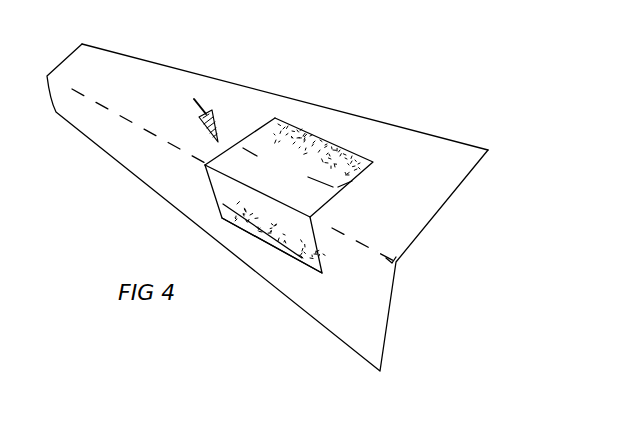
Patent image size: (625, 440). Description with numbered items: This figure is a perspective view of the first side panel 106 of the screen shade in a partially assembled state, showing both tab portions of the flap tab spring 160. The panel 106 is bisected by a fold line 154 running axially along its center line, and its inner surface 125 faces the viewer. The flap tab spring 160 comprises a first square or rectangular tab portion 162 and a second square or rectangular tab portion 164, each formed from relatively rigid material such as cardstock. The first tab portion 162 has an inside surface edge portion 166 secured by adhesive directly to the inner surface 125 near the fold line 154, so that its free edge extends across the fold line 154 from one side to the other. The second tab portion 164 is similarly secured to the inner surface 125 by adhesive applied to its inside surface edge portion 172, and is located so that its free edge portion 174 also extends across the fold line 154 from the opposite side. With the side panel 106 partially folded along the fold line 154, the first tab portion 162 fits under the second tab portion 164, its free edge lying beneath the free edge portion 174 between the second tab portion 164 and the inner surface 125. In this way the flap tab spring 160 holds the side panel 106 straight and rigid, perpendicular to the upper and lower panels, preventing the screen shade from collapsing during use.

The first side panel 106 is at (436, 205).
The inner surface 125 is at (115, 77).
The fold line 154 is at (371, 256).
The flap tab spring 160 is at (181, 109).
The free edge portion 174 is at (222, 155).
The inside surface edge portion 172 is at (288, 131).
The second tab portion 164 is at (345, 187).
The first tab portion 162 is at (225, 190).
The inside surface edge portion 166 is at (292, 259).